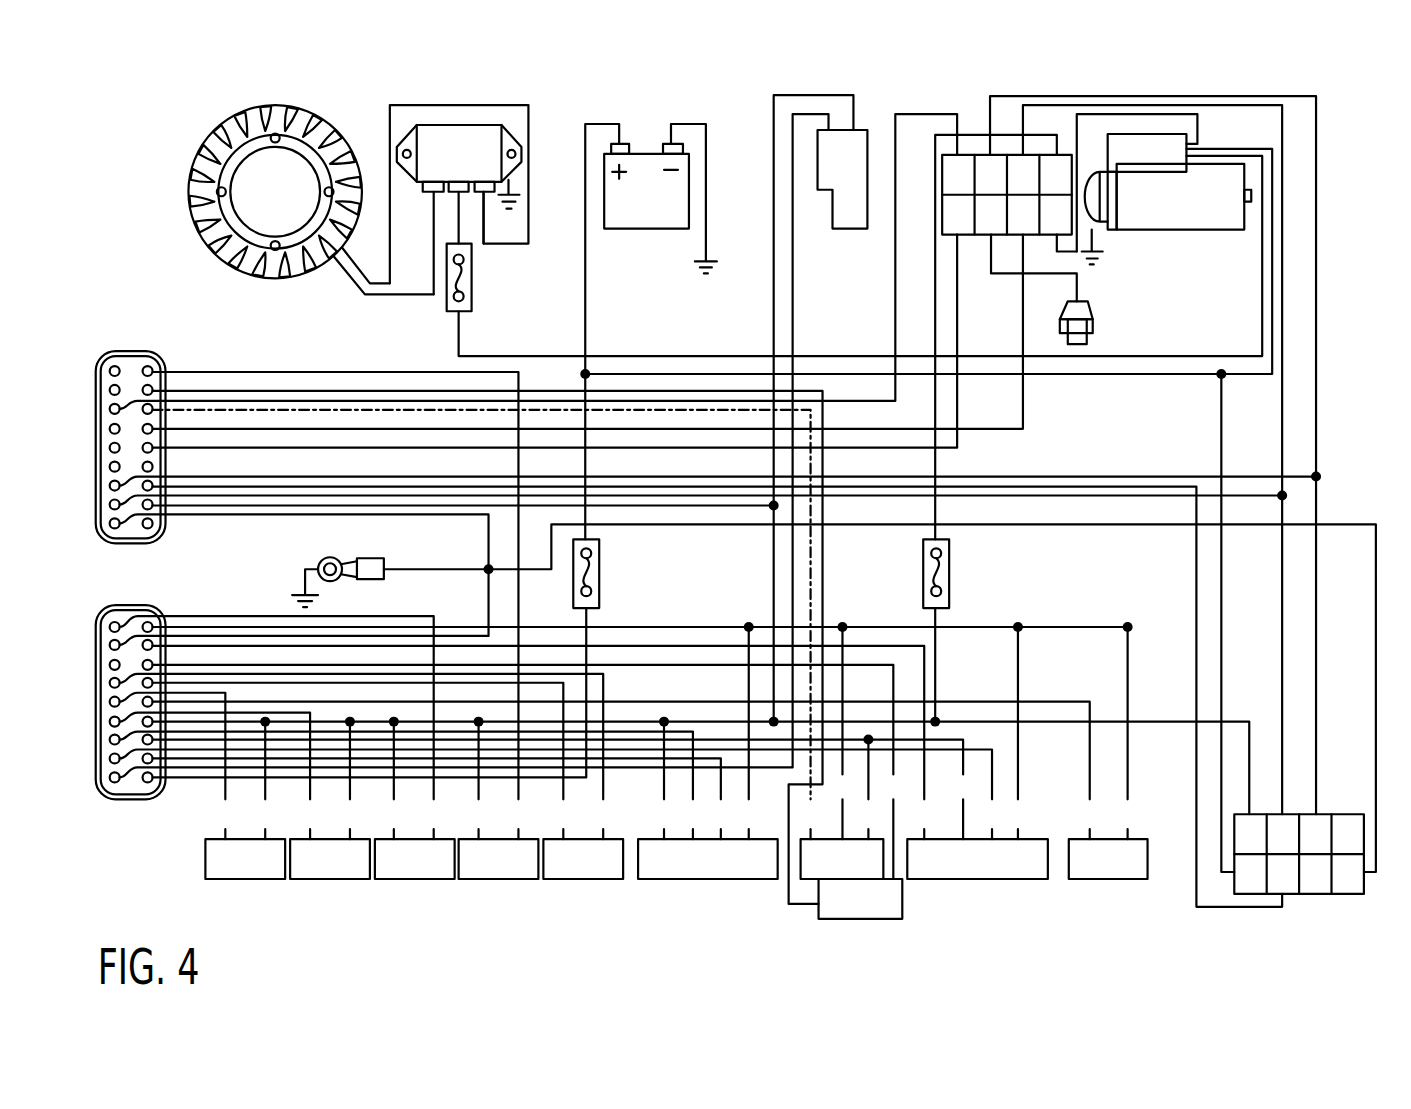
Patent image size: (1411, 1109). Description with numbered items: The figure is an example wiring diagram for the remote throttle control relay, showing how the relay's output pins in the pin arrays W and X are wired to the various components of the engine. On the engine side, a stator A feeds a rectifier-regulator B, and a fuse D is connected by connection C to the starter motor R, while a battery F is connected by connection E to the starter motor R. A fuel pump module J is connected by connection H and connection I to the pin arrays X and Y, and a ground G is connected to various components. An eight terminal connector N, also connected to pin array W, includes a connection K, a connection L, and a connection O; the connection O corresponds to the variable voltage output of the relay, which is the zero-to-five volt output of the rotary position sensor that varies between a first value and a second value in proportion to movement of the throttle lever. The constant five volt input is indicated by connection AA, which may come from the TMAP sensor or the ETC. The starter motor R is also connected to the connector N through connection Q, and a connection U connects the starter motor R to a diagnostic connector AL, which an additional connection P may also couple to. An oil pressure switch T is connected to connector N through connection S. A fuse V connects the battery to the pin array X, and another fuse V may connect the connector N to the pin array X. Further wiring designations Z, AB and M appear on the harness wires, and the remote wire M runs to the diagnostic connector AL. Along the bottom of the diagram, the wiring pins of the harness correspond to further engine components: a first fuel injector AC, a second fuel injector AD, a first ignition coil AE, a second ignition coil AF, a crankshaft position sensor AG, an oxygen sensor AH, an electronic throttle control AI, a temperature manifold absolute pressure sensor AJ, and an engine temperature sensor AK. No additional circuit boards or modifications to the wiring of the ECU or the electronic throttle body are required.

The stator A is at (216, 130).
The rectifier-regulator B is at (458, 123).
The connection C is at (457, 347).
The fuse D is at (470, 293).
The connection E is at (584, 228).
The battery F is at (645, 227).
The ground G is at (705, 193).
The connection H is at (773, 250).
The connection I is at (792, 277).
The fuel pump module J is at (850, 227).
The connection K is at (895, 258).
The connection L is at (935, 258).
The wire M is at (958, 337).
The eight terminal connector N is at (973, 235).
The connection O is at (1025, 333).
The connection P is at (1073, 95).
The connection Q is at (1198, 131).
The starter motor R is at (1168, 228).
The connection S is at (1078, 289).
The oil pressure switch T is at (1093, 328).
The connection U is at (1282, 461).
The fuse V is at (598, 572).
The pin array W is at (130, 547).
The pin array X is at (130, 804).
The pin array Y is at (365, 756).
The wire Z is at (487, 624).
The connection AA is at (565, 787).
The wire AB is at (545, 742).
The first fuel injector AC is at (243, 884).
The second fuel injector AD is at (328, 884).
The first ignition coil AE is at (412, 884).
The second ignition coil AF is at (497, 884).
The crankshaft position sensor AG is at (582, 884).
The oxygen sensor AH is at (705, 884).
The electronic throttle control (ETC) AI is at (845, 924).
The temperature manifold absolute pressure (TMAP) sensor AJ is at (977, 884).
The engine temperature sensor AK is at (1108, 884).
The diagnostic connector AL is at (1316, 899).